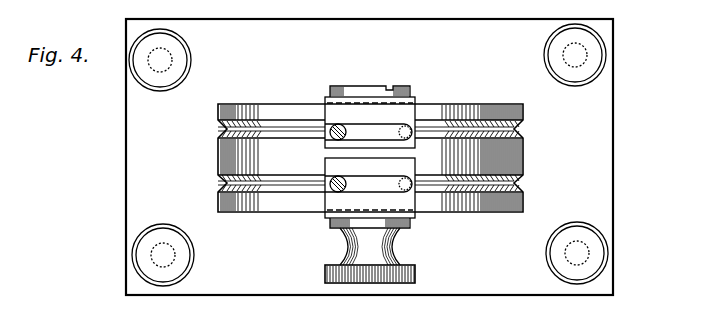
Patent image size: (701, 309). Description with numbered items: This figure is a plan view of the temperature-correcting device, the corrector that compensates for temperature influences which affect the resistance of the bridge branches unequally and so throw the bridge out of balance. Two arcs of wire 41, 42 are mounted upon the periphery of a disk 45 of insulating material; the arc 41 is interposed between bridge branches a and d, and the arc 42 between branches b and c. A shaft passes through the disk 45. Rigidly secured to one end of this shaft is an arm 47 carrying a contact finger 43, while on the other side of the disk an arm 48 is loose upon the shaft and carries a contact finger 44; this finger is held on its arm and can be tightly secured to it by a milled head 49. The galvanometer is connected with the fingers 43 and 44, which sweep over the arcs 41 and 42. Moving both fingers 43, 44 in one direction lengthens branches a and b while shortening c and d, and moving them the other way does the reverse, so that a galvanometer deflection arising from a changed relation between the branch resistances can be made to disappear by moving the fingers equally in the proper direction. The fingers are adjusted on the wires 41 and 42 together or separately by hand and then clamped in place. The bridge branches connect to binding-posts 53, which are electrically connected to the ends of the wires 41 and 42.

The arc of wire 41 is at (524, 129).
The arc of wire 42 is at (524, 183).
The contact finger 43 is at (370, 122).
The contact finger 44 is at (370, 188).
The disk 45 is at (482, 100).
The arm 47 is at (413, 97).
The arm 48 is at (413, 219).
The milled head 49 is at (416, 271).
The binding-posts 53 is at (621, 253).